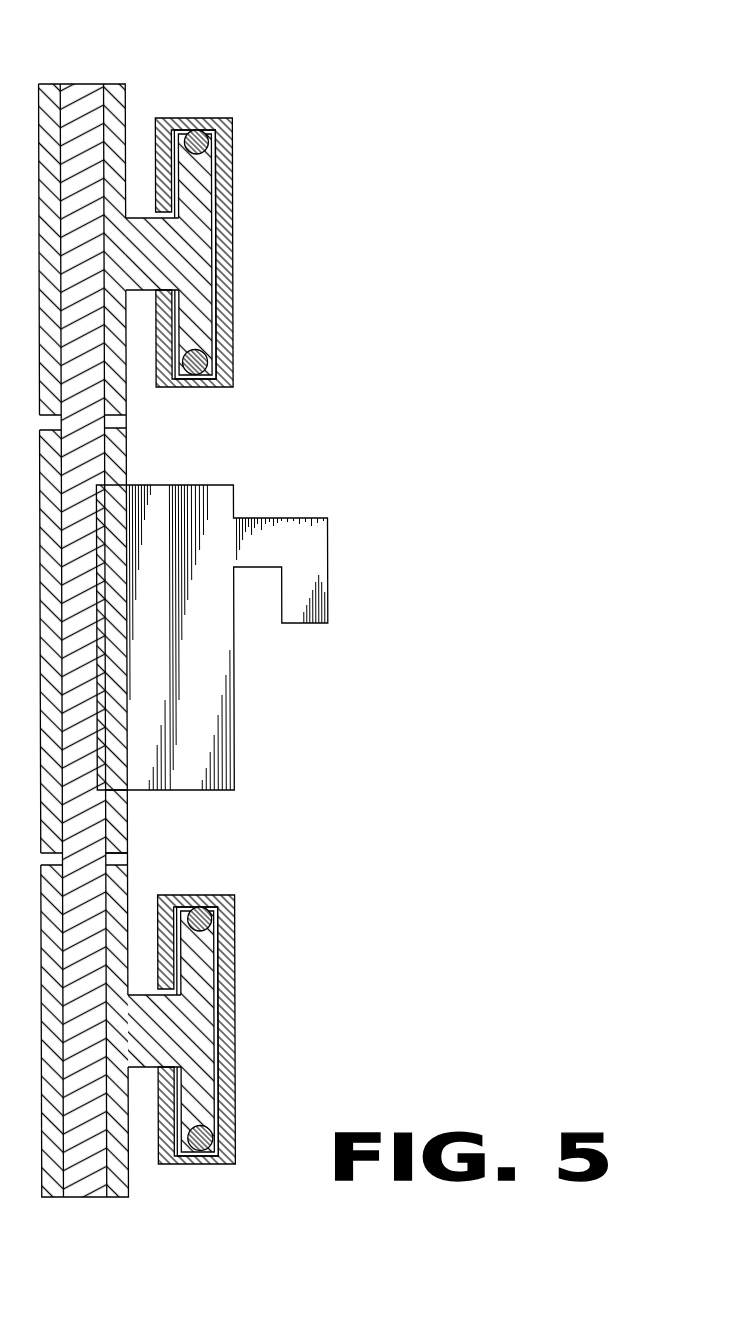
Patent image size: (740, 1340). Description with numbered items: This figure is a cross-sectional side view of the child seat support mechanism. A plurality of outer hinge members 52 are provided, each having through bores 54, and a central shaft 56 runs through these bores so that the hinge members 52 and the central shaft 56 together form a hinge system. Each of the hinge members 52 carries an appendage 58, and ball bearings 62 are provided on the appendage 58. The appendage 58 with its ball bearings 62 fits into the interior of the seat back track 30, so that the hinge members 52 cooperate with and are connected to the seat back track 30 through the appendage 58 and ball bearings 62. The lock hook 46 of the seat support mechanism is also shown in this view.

The seat back track 30 is at (233, 237).
The lock hook 46 is at (318, 518).
The outer hinge members 52 is at (123, 366).
The through bores 54 is at (100, 84).
The central shaft 56 is at (105, 832).
The appendage 58 is at (208, 181).
The ball bearings 62 is at (206, 134).